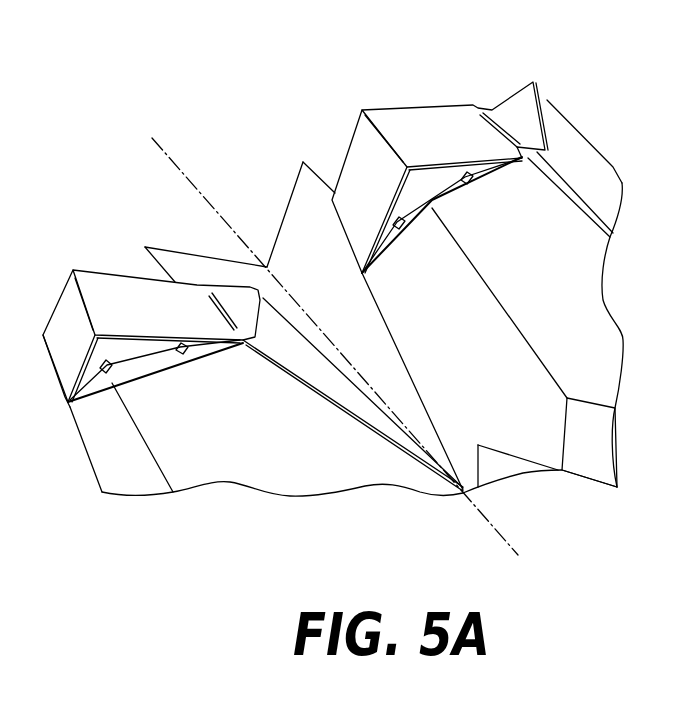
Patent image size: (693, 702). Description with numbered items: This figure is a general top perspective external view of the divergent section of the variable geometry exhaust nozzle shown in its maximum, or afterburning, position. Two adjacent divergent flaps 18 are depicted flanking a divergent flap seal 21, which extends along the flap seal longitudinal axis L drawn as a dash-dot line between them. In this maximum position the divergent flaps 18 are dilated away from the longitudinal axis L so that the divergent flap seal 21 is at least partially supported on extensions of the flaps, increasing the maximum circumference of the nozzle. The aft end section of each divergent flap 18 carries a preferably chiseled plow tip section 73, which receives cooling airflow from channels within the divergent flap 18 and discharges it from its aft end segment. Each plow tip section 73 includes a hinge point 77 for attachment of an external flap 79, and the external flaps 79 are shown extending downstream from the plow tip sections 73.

The flap seal longitudinal axis L is at (176, 168).
The divergent flap 18 is at (229, 470).
The divergent flap seal 21 is at (310, 227).
The plow tip section 73 is at (105, 290).
The hinge point 77 is at (597, 372).
The external flap 79 is at (230, 428).